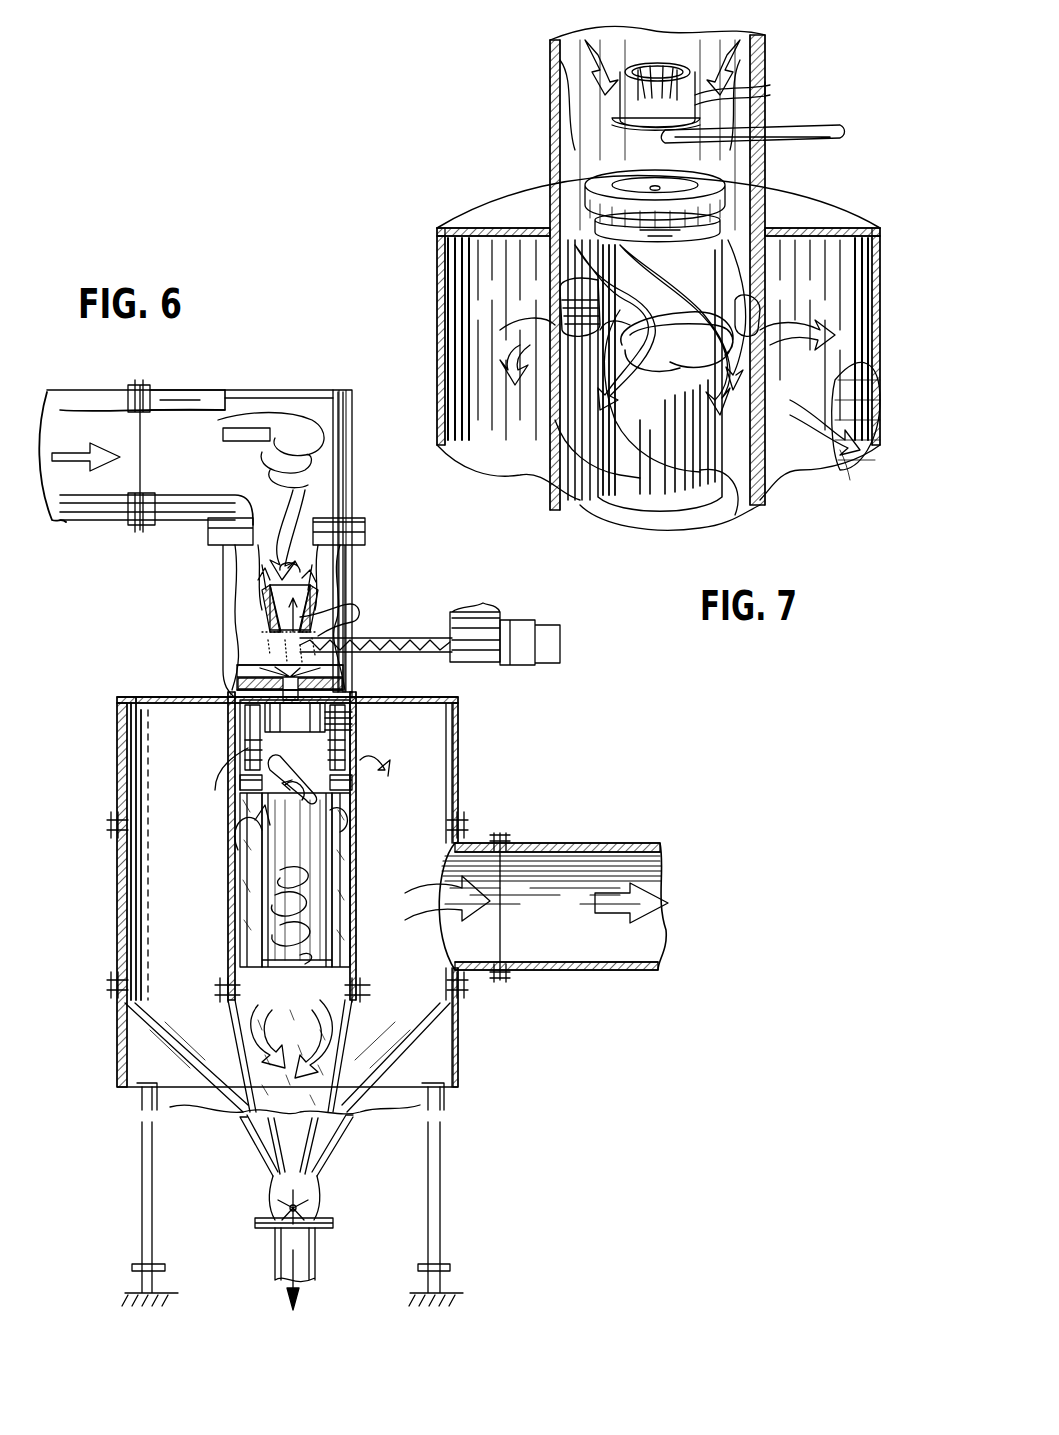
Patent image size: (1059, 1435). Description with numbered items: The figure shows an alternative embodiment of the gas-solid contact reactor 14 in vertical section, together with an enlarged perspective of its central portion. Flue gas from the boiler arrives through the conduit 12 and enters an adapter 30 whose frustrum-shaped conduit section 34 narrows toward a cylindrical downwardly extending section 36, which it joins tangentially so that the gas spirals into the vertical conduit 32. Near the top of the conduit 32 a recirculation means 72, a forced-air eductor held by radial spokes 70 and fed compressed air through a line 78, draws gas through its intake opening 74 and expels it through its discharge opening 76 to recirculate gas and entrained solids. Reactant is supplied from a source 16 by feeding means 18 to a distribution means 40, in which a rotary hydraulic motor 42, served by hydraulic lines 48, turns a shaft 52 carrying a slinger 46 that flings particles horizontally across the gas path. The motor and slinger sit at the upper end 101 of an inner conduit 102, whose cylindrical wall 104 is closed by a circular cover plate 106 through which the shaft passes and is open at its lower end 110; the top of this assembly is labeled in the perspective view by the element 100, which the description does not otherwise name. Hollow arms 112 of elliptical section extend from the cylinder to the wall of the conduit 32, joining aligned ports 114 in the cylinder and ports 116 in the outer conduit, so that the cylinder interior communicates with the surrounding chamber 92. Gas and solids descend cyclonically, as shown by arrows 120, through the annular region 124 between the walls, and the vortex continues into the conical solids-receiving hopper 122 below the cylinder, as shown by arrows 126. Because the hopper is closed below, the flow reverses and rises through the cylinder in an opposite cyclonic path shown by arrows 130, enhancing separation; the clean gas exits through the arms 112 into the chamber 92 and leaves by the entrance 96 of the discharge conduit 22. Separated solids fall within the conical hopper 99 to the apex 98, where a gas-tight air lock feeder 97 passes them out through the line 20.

In FIG. 6, the flue gas conduit 12 is at (92, 398).
In FIG. 6, the reactor 14 is at (105, 812).
In FIG. 6, the source 16 is at (482, 628).
In FIG. 6, the feeding means 18 is at (437, 615).
In FIG. 7, the feeding means 18 is at (798, 130).
In FIG. 6, the line 20 is at (314, 1254).
In FIG. 6, the flue gas conduit 22 is at (612, 843).
In FIG. 7, the flue gas conduit 22 is at (862, 478).
In FIG. 6, the adapter 30 is at (357, 438).
In FIG. 6, the conduit 32 is at (358, 866).
In FIG. 7, the conduit 32 is at (548, 135).
In FIG. 6, the conduit section 34 is at (212, 398).
In FIG. 6, the conduit section 36 is at (350, 498).
In FIG. 6, the distribution means 40 is at (225, 716).
In FIG. 6, the rotary hydraulic motor 42 is at (282, 733).
In FIG. 6, the slinger 46 is at (348, 680).
In FIG. 7, the slinger 46 is at (597, 168).
In FIG. 6, the lines 48 is at (376, 705).
In FIG. 6, the shaft 52 is at (237, 697).
In FIG. 7, the shaft 52 is at (735, 210).
In FIG. 6, the radial spokes 70 is at (236, 598).
In FIG. 7, the radial spokes 70 is at (560, 115).
In FIG. 6, the recirculation means 72 is at (262, 612).
In FIG. 7, the recirculation means 72 is at (705, 92).
In FIG. 6, the intake opening 74 is at (285, 636).
In FIG. 6, the discharge opening 76 is at (305, 592).
In FIG. 7, the discharge opening 76 is at (660, 72).
In FIG. 6, the line 78 is at (340, 618).
In FIG. 6, the chamber 92 is at (140, 860).
In FIG. 7, the chamber 92 is at (440, 255).
In FIG. 6, the entrance 96 is at (455, 872).
In FIG. 7, the entrance 96 is at (852, 398).
In FIG. 6, the air lock feeder 97 is at (312, 1208).
In FIG. 6, the apex 98 is at (335, 1165).
In FIG. 6, the conical-shaped hopper 99 is at (435, 1058).
In FIG. 7, the top plate 100 is at (645, 228).
In FIG. 6, the upper end 101 is at (272, 720).
In FIG. 6, the conduit 102 is at (240, 892).
In FIG. 7, the conduit 102 is at (640, 465).
In FIG. 6, the cylindrical wall 104 is at (332, 886).
In FIG. 7, the cylindrical wall 104 is at (717, 425).
In FIG. 6, the circular cover plate 106 is at (360, 690).
In FIG. 7, the circular cover plate 106 is at (752, 225).
In FIG. 6, the lower end 110 is at (262, 1005).
In FIG. 7, the lower end 110 is at (682, 525).
In FIG. 6, the hollow arms 112 is at (248, 755).
In FIG. 7, the hollow arms 112 is at (560, 305).
In FIG. 6, the ports 114 is at (320, 790).
In FIG. 6, the ports 116 is at (228, 776).
In FIG. 7, the ports 116 is at (560, 368).
In FIG. 6, the arrows 120 is at (290, 430).
In FIG. 7, the arrows 120 is at (655, 250).
In FIG. 6, the solids-receiving hopper 122 is at (342, 1068).
In FIG. 6, the annular region 124 is at (243, 930).
In FIG. 7, the annular region 124 is at (575, 458).
In FIG. 6, the arrows 126 is at (338, 1045).
In FIG. 6, the arrows 130 is at (278, 935).